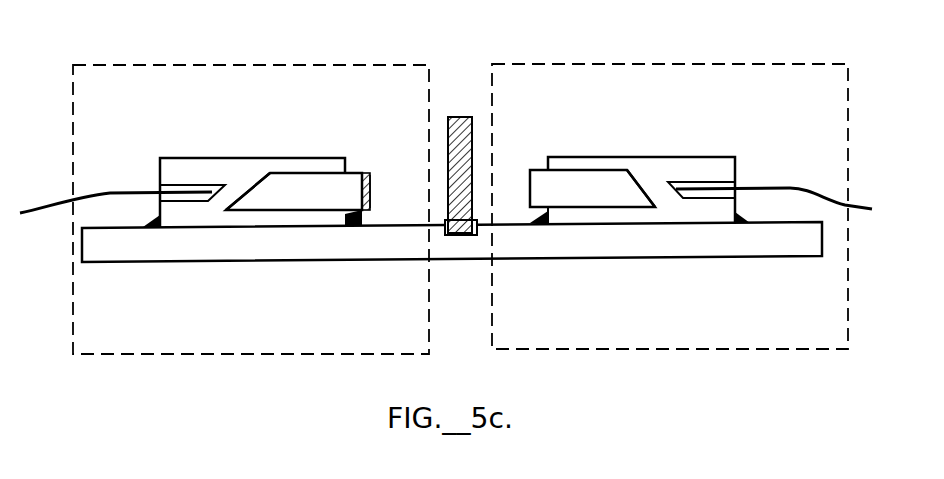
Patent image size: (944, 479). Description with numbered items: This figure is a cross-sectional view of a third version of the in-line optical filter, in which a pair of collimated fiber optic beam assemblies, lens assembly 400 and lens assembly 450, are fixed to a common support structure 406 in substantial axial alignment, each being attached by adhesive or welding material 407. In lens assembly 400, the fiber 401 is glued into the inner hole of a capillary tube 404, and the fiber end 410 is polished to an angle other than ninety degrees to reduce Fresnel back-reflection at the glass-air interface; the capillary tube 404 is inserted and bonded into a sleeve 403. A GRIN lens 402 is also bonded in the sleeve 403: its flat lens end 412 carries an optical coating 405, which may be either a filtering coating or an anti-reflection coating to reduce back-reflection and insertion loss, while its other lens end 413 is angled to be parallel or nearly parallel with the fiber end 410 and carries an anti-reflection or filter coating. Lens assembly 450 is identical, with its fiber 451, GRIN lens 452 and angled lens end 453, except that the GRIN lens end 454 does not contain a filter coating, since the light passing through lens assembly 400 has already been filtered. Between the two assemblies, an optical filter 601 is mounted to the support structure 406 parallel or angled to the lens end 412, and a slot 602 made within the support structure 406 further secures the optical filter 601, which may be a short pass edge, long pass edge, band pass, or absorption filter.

The lens assembly 400 is at (250, 68).
The lens assembly 450 is at (692, 67).
The fiber 401 is at (121, 189).
The GRIN lens 402 is at (292, 178).
The sleeve 403 is at (217, 165).
The capillary tube 404 is at (182, 182).
The optical coating 405 is at (365, 172).
The support structure 406 is at (128, 250).
The adhesive or welding material 407 is at (364, 215).
The fiber end 410 is at (212, 207).
The lens end 412 is at (374, 187).
The lens end 413 is at (256, 180).
The fiber 451 is at (787, 184).
The GRIN lens 452 is at (597, 180).
The lens end 453 is at (642, 181).
The GRIN lens end 454 is at (526, 187).
The optical filter 601 is at (459, 115).
The slot 602 is at (466, 240).